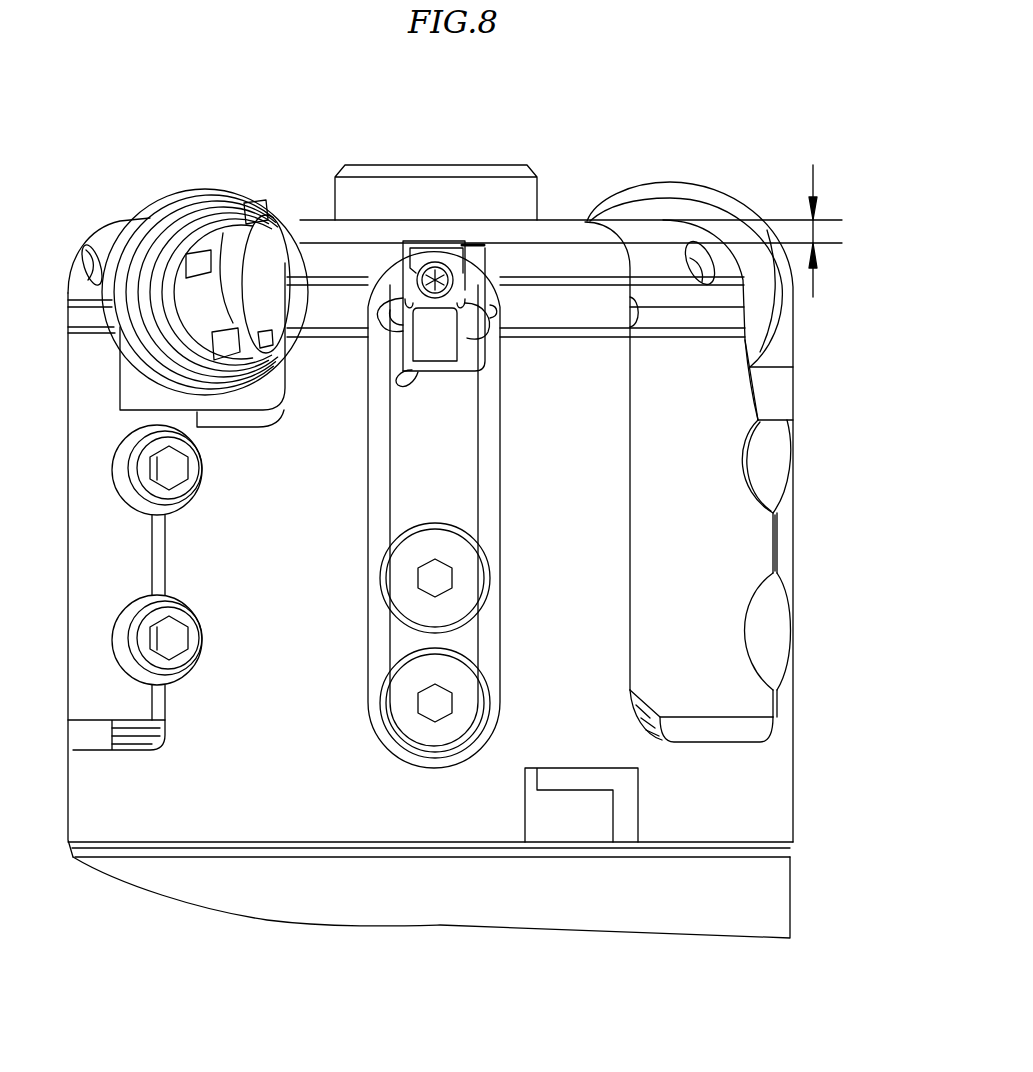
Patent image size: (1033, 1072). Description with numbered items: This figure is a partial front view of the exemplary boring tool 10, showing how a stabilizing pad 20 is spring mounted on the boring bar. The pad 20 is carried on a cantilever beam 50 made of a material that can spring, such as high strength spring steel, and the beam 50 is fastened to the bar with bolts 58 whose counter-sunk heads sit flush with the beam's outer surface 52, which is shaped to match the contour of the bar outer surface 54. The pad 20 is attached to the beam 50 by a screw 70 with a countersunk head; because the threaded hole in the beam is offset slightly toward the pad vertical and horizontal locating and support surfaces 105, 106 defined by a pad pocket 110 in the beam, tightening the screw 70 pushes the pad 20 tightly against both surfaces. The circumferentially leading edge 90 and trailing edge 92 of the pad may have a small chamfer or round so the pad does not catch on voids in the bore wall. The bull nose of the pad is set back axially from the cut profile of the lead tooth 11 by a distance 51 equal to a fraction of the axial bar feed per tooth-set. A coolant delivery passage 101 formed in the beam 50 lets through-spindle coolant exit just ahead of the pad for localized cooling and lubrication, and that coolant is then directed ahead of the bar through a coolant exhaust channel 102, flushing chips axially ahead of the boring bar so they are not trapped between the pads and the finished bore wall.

The housing 10 is at (158, 218).
The lead tooth 11 is at (723, 207).
The pad 20 is at (398, 364).
The cantilever beam 50 is at (433, 492).
The distance 51 is at (815, 173).
The outer surface 52 is at (410, 488).
The bar outer surface 54 is at (613, 738).
The bolts 58 is at (437, 577).
The screw 70 is at (448, 263).
The circumferentially leading edge 90 is at (470, 342).
The circumferentially trailing edge 92 is at (437, 343).
The coolant delivery passage 101 is at (484, 304).
The coolant exhaust channel 102 is at (477, 270).
The pad vertical locating and support surface 105 is at (403, 299).
The pad horizontal locating and support surface 106 is at (447, 380).
The pad pocket 110 is at (480, 358).